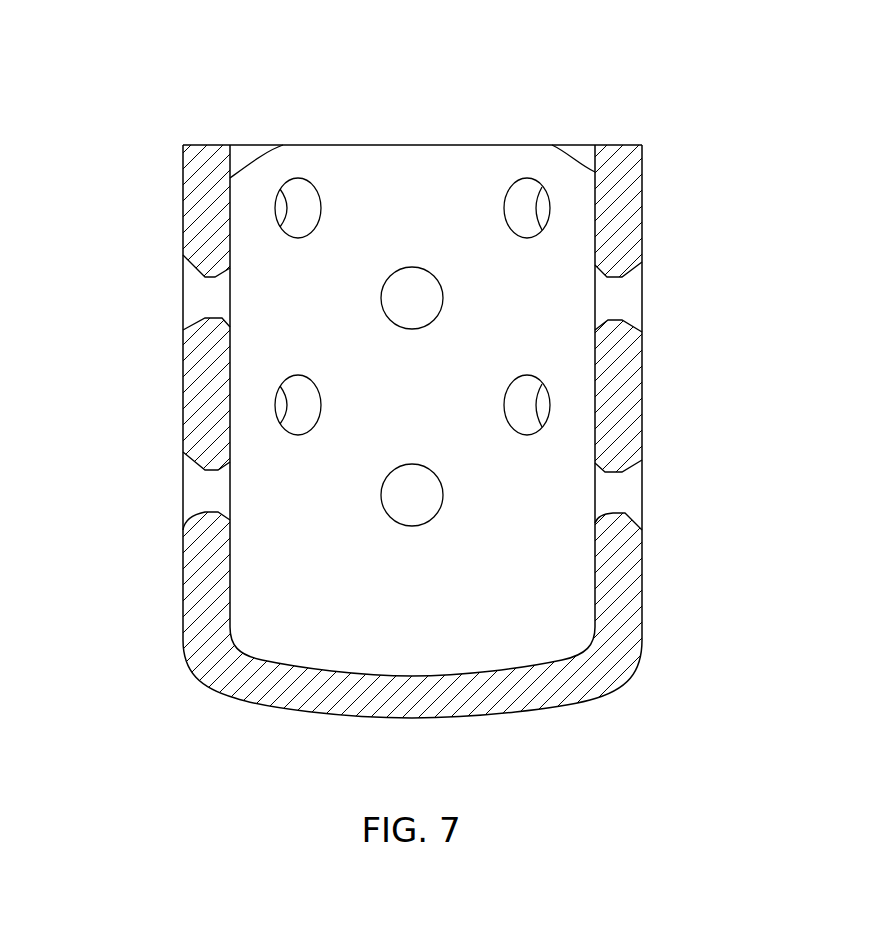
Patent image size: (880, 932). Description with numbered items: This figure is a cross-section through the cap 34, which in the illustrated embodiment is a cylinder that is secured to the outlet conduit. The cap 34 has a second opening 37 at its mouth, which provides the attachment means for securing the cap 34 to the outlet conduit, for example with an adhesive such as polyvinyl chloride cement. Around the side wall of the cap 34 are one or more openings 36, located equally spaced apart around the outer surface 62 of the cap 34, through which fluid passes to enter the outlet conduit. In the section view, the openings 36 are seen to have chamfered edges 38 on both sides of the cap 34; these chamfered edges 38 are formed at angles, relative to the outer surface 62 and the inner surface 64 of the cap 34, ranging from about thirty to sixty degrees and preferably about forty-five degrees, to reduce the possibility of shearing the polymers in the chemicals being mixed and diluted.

The cap 34 is at (269, 701).
The openings 36 is at (623, 297).
The second opening 37 is at (407, 185).
The chamfered edges 38 is at (630, 265).
The outer surface 62 is at (643, 190).
The inner surface 64 is at (280, 143).